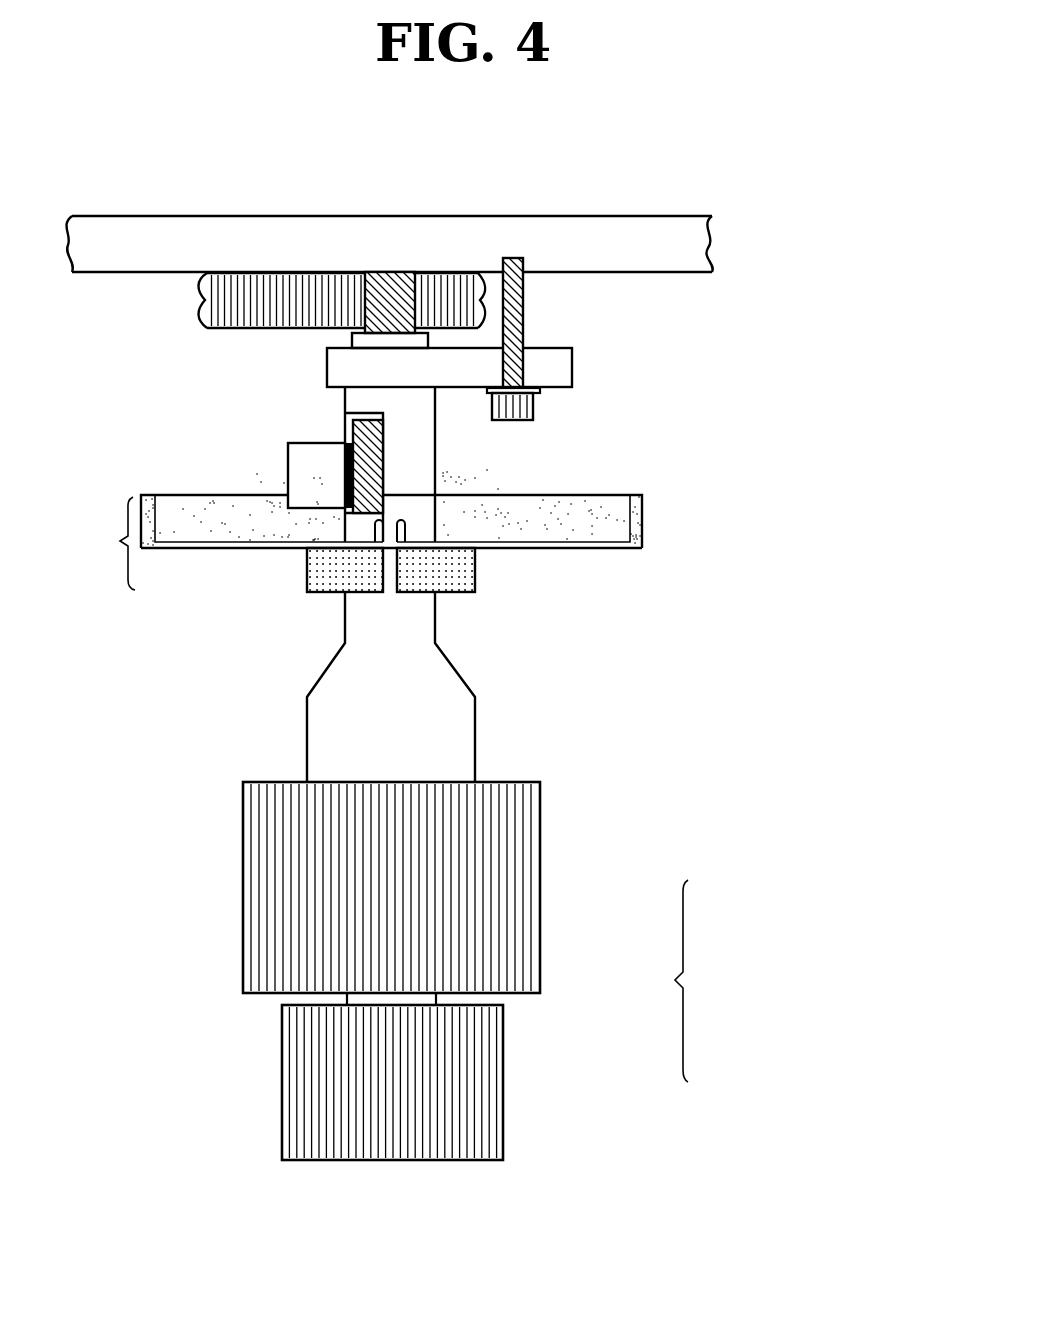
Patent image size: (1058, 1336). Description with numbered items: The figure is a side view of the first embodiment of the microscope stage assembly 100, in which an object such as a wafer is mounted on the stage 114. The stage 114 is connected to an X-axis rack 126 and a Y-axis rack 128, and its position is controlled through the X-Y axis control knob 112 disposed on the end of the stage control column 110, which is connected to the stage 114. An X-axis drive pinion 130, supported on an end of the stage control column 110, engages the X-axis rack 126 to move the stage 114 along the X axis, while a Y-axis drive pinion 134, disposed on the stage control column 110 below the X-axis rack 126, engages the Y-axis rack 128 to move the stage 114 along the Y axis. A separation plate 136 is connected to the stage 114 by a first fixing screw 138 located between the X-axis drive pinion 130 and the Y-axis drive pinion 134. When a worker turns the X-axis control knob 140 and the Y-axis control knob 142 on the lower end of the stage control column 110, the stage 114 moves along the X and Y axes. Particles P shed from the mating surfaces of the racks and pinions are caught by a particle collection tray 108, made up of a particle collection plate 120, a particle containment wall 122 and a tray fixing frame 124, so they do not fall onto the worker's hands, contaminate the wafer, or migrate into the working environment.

The stage assembly 100 is at (740, 399).
The particle collection tray 108 is at (97, 543).
The stage control column 110 is at (475, 712).
The X-Y axis control knob 112 is at (550, 981).
The stage 114 is at (713, 244).
The particle collection plate 120 is at (212, 548).
The particle containment wall 122 is at (645, 517).
The tray fixing frame 124 is at (475, 572).
The X-axis rack 126 is at (208, 303).
The Y-axis rack 128 is at (300, 467).
The X-axis drive pinion 130 is at (392, 272).
The Y-axis drive pinion 134 is at (353, 425).
The separation plate 136 is at (572, 367).
The first fixing screw 138 is at (512, 420).
The X-axis control knob 140 is at (503, 1082).
The Y-axis control knob 142 is at (540, 883).
The particles P is at (487, 488).